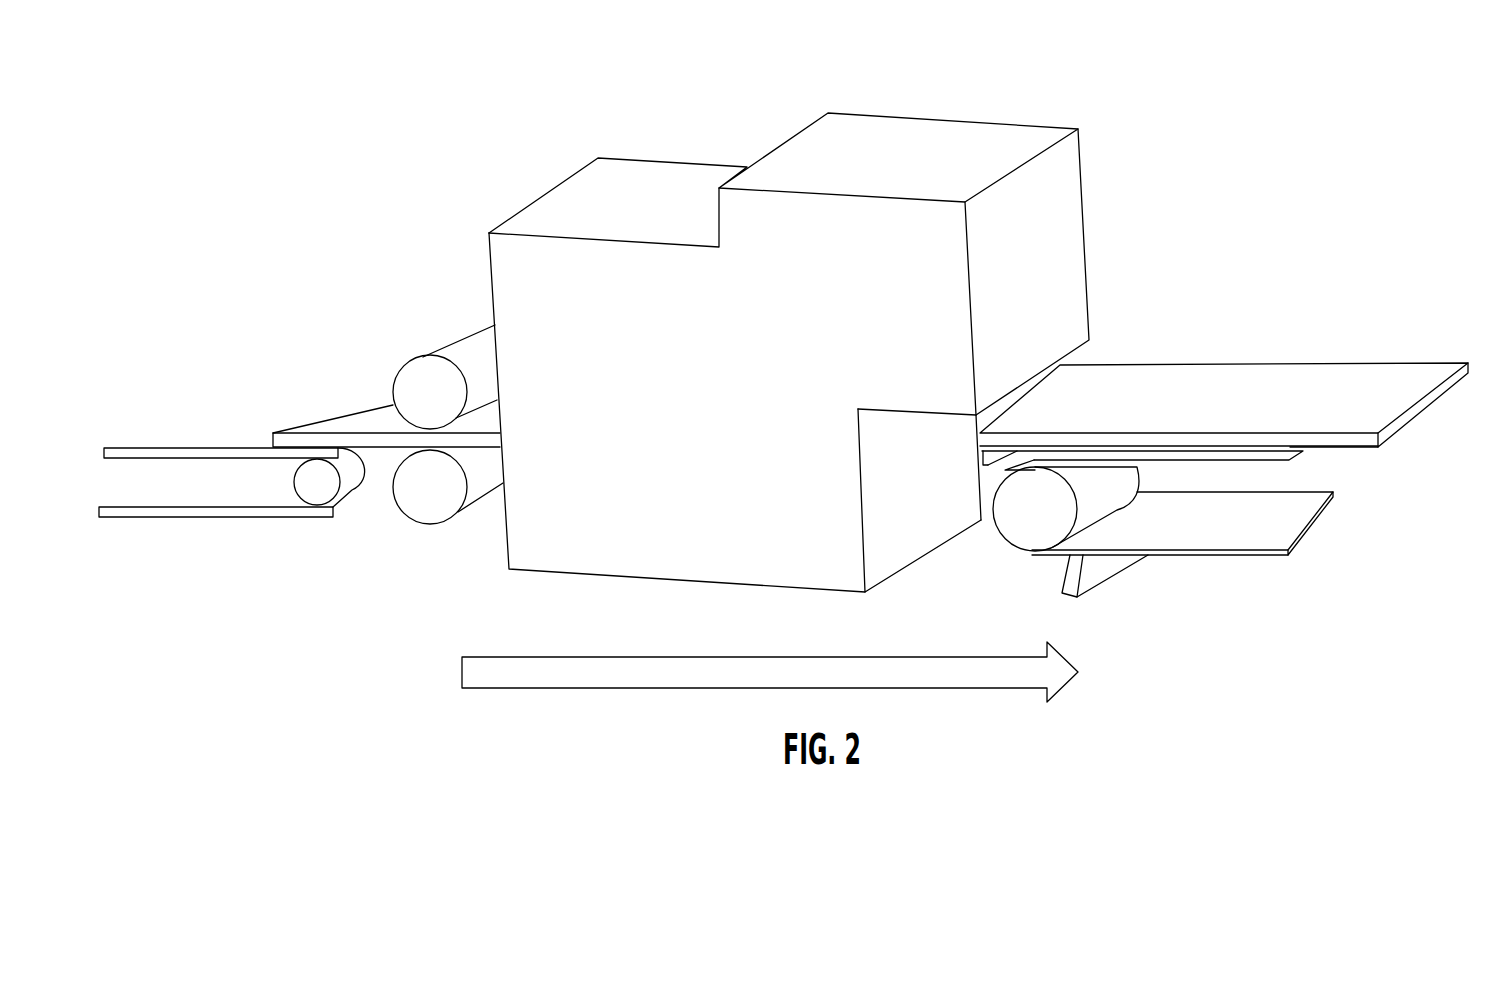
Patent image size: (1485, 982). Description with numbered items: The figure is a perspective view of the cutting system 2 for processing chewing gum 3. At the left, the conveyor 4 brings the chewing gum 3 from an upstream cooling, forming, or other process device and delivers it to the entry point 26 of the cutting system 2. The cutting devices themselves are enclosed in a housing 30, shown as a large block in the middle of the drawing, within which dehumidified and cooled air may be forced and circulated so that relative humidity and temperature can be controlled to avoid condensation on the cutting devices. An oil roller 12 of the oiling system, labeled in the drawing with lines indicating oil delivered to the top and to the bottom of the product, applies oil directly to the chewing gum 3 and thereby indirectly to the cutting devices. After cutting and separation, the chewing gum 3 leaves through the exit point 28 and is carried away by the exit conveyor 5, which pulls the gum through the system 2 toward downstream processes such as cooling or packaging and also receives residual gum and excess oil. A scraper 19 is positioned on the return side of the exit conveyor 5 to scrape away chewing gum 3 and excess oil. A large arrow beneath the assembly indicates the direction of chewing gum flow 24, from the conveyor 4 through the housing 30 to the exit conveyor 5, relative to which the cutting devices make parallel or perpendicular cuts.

The cutting system 2 is at (783, 335).
The housing 30 is at (1087, 127).
The chewing gum 3 is at (1180, 363).
The exit point 28 is at (1363, 450).
The exit conveyor 5 is at (1160, 463).
The scraper 19 is at (1077, 600).
The conveyor 4 is at (237, 460).
The entry point 26 is at (272, 435).
The oil roller 12 is at (402, 370).
The direction of chewing gum flow 24 is at (543, 692).